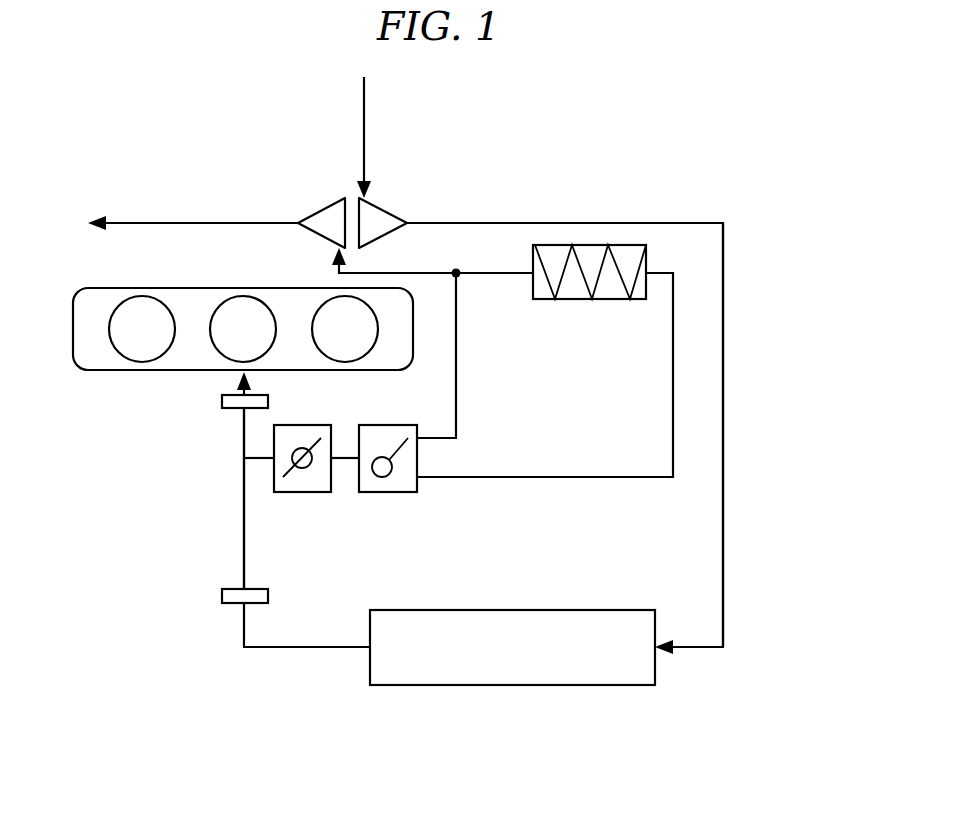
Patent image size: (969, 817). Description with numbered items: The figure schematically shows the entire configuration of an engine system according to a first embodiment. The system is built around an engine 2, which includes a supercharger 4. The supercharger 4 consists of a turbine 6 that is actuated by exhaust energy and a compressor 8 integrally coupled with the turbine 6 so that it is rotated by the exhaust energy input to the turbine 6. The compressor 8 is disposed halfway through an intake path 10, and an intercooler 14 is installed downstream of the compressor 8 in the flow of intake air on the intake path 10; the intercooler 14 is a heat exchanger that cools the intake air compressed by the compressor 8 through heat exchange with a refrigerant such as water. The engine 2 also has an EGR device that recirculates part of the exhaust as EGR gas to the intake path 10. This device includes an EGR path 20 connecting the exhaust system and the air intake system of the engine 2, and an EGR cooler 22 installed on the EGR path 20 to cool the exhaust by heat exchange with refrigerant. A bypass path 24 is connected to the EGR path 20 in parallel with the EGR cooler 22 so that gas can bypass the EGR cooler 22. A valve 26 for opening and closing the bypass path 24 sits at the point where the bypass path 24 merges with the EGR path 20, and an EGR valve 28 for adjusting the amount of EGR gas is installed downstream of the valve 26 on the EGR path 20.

The engine 2 is at (202, 296).
The supercharger 4 is at (330, 174).
The turbine 6 is at (323, 217).
The compressor 8 is at (377, 216).
The intake path 10 is at (724, 325).
The intercooler 14 is at (551, 608).
The EGR path 20 is at (484, 277).
The EGR cooler 22 is at (572, 302).
The bypass path 24 is at (456, 386).
The valve 26 is at (390, 494).
The EGR valve 28 is at (305, 494).